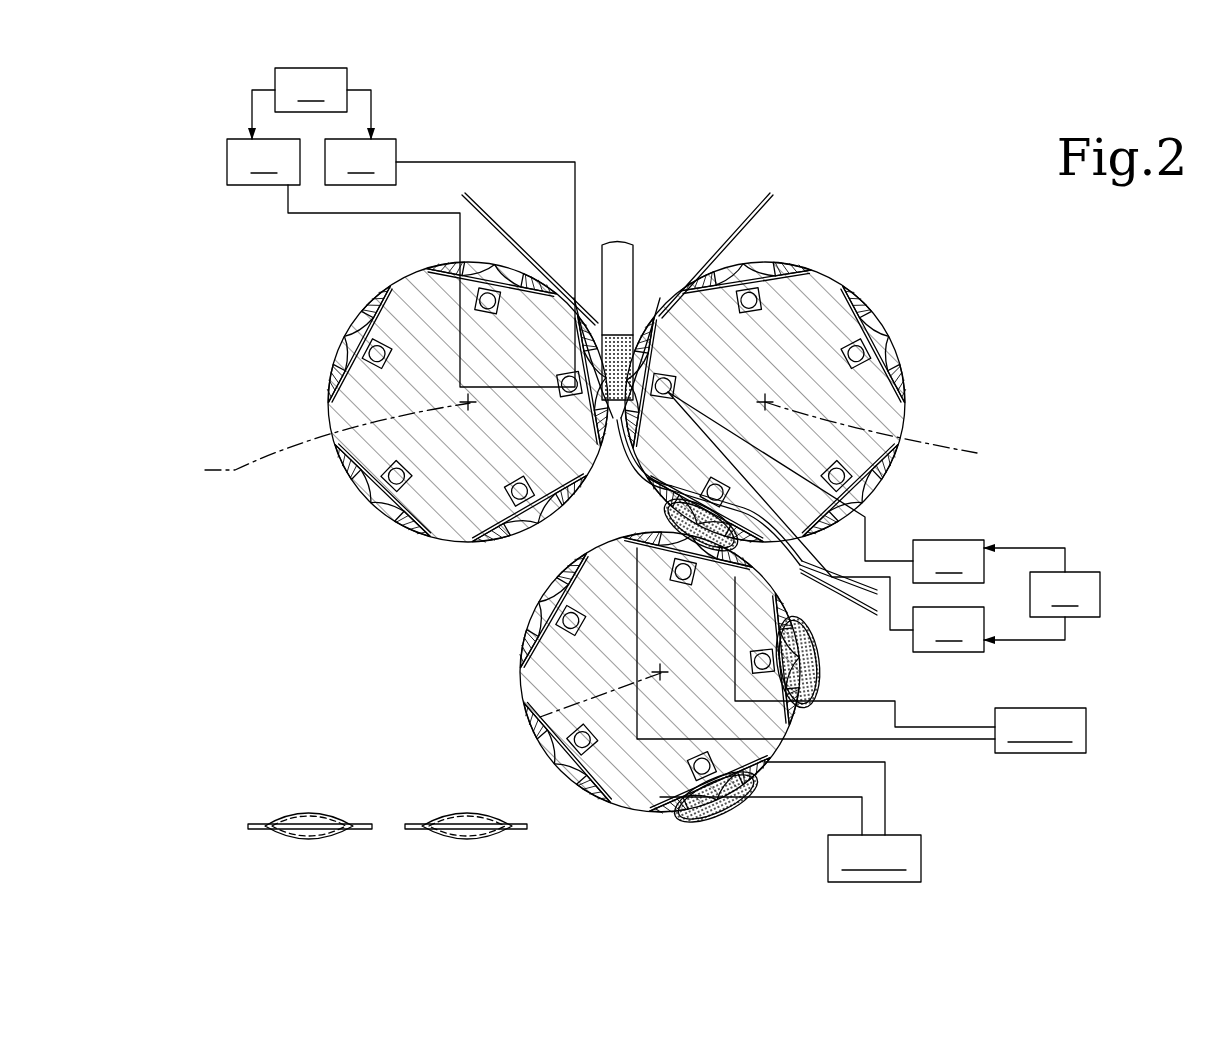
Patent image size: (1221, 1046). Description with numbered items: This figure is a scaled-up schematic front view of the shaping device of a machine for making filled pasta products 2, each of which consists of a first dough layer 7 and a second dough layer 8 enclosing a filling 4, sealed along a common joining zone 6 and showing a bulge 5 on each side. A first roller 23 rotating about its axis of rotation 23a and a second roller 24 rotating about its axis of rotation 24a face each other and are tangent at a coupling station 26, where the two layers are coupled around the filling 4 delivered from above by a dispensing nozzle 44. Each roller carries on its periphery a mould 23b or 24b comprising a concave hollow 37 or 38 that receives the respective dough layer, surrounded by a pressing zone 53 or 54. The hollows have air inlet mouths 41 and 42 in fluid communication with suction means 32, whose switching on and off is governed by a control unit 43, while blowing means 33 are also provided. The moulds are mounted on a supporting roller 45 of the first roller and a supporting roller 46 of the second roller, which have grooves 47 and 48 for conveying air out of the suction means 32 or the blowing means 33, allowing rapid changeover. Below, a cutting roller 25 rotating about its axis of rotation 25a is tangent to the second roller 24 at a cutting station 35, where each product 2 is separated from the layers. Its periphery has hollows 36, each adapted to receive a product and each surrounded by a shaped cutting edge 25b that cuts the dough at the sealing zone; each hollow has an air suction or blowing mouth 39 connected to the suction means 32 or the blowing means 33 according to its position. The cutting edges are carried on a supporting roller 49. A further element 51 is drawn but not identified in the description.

The filled pasta product 2 is at (323, 798).
The filling 4 is at (688, 320).
The bulge 5 is at (343, 799).
The joining zone 6 is at (365, 832).
The first dough layer 7 is at (507, 235).
The second dough layer 8 is at (728, 235).
The first roller 23 is at (337, 397).
The axis of rotation 23a is at (313, 444).
The mould 23b is at (370, 293).
The second roller 24 is at (903, 422).
The axis of rotation 24a is at (892, 435).
The mould 24b is at (648, 305).
The cutting roller 25 is at (550, 668).
The axis of rotation 25a is at (538, 718).
The cutting edge 25b is at (586, 538).
The coupling station 26 is at (610, 458).
The suction means 32 is at (705, 510).
The blowing means 33 is at (605, 395).
The cutting station 35 is at (828, 595).
The hollow 36 is at (532, 615).
The hollow 37 is at (358, 338).
The hollow 38 is at (778, 263).
The air suction or blowing mouth 39 is at (720, 548).
The air inlet mouth 41 is at (353, 367).
The air inlet mouth 42 is at (750, 270).
The control unit 43 is at (676, 354).
The dispensing nozzle 44 is at (611, 246).
The supporting roller 45 is at (418, 553).
The supporting roller 46 is at (883, 463).
The grooves 47 is at (398, 490).
The grooves 48 is at (855, 450).
The supporting roller 49 is at (650, 765).
The web path 51 is at (622, 532).
The pressing zone 53 is at (363, 342).
The pressing zone 54 is at (877, 293).